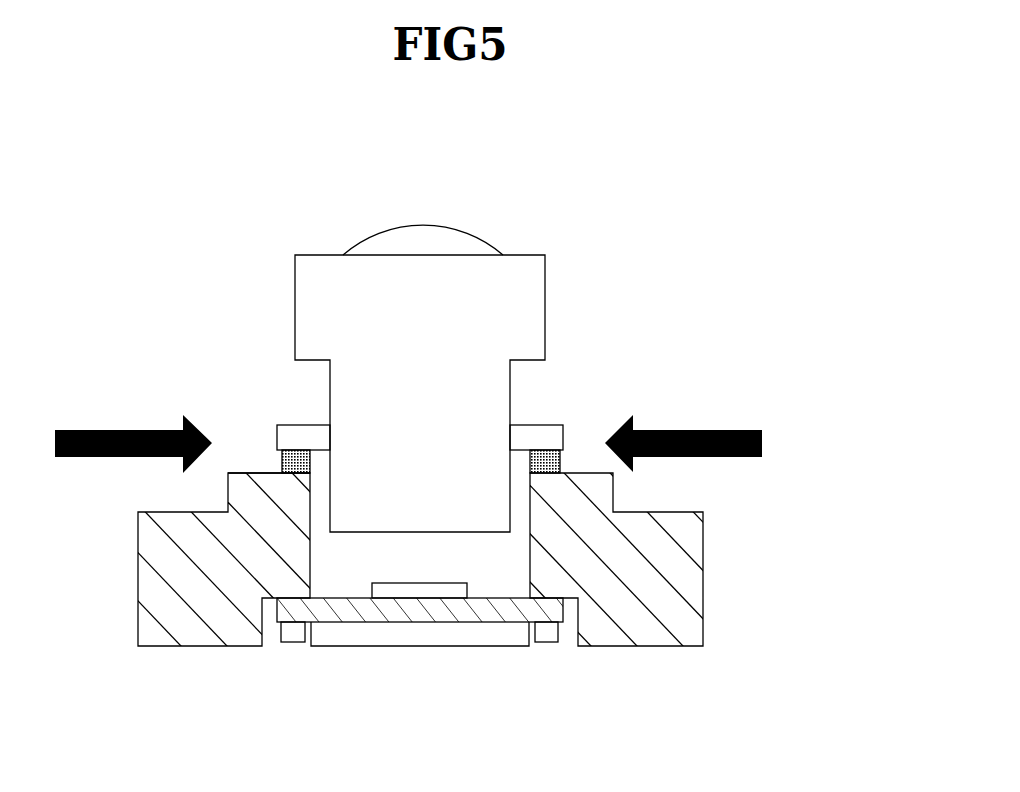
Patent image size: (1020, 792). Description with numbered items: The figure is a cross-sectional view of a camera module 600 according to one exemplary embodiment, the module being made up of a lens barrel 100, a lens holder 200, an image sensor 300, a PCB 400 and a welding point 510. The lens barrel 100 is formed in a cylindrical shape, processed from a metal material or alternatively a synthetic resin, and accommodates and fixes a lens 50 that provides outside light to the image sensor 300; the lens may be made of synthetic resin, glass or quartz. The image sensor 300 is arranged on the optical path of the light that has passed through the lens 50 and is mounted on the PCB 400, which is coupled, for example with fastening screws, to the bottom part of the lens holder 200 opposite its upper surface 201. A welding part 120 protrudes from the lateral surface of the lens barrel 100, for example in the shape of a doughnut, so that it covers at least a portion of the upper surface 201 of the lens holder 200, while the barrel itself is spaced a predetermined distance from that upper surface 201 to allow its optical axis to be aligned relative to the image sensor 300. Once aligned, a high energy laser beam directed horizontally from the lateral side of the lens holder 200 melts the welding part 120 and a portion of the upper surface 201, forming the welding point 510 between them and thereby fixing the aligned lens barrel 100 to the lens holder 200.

The lens 50 is at (455, 238).
The lens barrel 100 is at (372, 286).
The welding part 120 is at (535, 432).
The lens holder 200 is at (728, 503).
The upper surface of lens holder 201 is at (257, 472).
The image sensor 300 is at (398, 588).
The PCB 400 is at (492, 624).
The welding point 510 is at (283, 448).
The camera module 600 is at (666, 210).